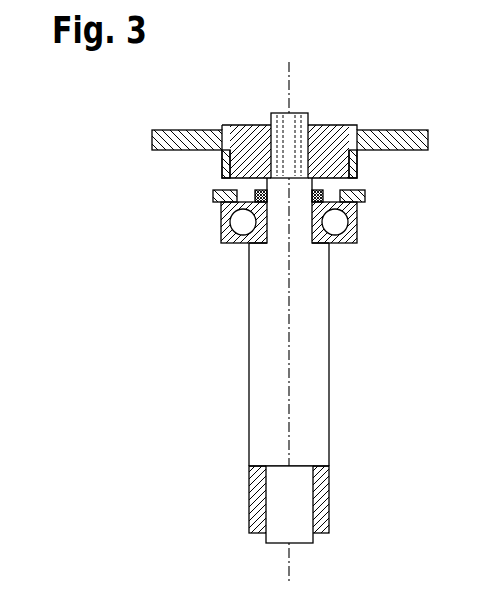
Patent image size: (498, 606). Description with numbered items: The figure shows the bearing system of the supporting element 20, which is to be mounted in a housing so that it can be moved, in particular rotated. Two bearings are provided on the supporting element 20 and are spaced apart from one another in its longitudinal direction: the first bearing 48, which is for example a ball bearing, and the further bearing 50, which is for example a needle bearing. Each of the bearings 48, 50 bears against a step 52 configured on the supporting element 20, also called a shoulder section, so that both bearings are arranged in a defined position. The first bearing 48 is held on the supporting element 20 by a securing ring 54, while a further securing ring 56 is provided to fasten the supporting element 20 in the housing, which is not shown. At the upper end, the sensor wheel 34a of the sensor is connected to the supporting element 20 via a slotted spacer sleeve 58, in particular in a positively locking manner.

The supporting element 20 is at (316, 349).
The sensor wheel 34a is at (407, 138).
The first bearing 48 is at (358, 212).
The further bearing 50 is at (322, 497).
The step 52 is at (251, 247).
The securing ring 54 is at (322, 192).
The further securing ring 56 is at (213, 195).
The slotted spacer sleeve 58 is at (329, 137).